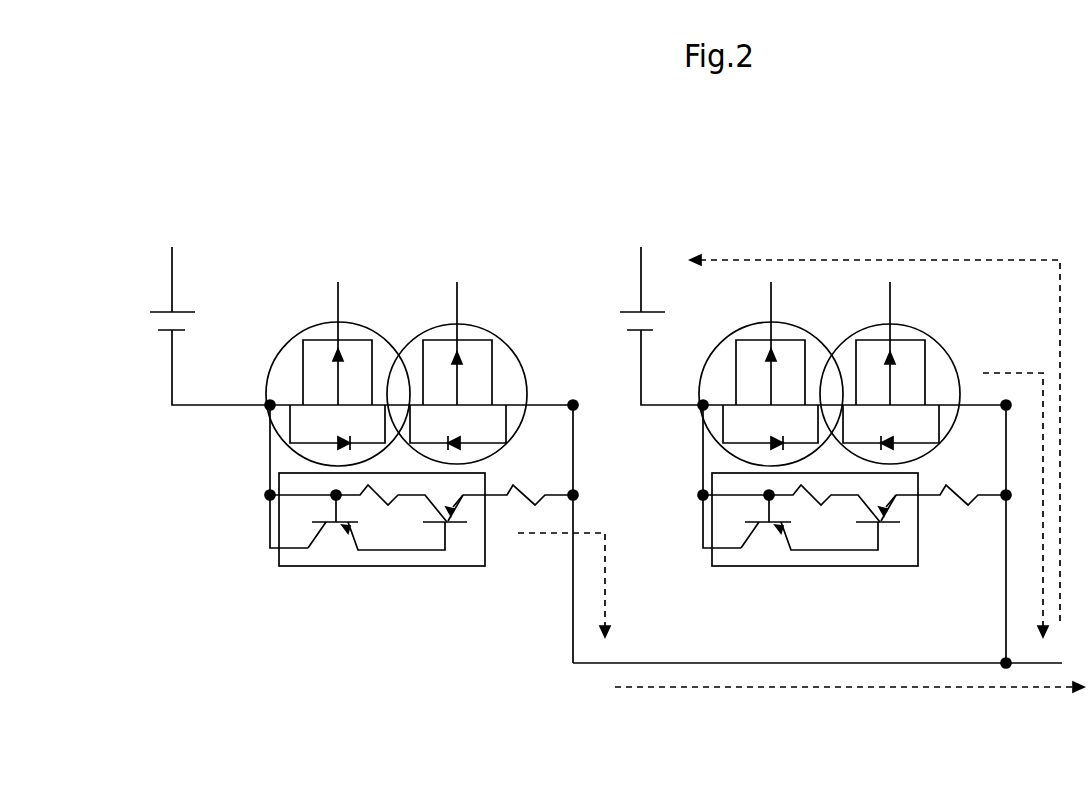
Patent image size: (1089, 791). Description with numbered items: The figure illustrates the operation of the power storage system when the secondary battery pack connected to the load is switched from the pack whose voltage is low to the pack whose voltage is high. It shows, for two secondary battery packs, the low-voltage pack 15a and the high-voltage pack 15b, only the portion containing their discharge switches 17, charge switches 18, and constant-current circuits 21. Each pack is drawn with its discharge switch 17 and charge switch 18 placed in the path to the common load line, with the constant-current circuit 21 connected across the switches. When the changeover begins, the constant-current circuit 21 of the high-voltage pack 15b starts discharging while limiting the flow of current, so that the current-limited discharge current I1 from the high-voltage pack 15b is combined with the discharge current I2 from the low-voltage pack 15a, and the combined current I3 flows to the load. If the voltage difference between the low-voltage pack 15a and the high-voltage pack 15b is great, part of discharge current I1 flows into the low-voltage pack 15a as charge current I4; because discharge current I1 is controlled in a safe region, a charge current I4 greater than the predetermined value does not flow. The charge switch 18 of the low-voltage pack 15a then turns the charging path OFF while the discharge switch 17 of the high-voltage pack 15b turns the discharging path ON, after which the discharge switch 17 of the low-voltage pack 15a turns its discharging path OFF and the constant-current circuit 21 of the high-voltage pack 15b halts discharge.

The low-voltage pack 15a is at (817, 445).
The high-voltage pack 15b is at (364, 436).
The discharge switch 17 is at (283, 352).
The charge switch 18 is at (518, 355).
The constant-current circuit 21 is at (383, 567).
The discharge current I1 is at (533, 534).
The discharge current I2 is at (1018, 372).
The current I3 is at (836, 689).
The charge current I4 is at (1030, 259).